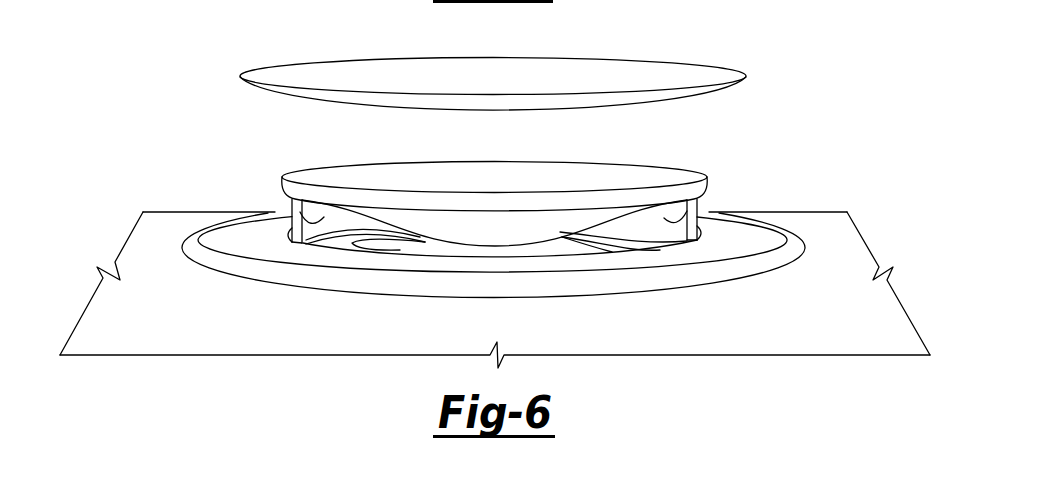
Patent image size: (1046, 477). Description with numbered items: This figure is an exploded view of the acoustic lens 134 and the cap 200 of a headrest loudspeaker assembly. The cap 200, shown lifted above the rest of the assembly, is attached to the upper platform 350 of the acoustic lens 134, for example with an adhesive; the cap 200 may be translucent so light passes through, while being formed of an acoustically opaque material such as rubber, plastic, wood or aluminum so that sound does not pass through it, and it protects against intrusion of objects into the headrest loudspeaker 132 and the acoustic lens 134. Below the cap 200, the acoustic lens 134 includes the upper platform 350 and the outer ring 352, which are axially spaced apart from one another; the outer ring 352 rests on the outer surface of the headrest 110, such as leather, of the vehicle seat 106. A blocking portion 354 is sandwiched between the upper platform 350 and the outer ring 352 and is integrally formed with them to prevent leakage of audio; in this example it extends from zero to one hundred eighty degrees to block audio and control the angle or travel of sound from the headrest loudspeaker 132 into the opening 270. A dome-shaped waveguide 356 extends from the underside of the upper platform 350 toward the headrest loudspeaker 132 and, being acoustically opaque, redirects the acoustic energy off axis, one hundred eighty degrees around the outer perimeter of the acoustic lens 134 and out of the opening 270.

The cap 200 is at (345, 76).
The upper platform 350 is at (343, 175).
The outer ring 352 is at (237, 237).
The blocking portion 354 is at (300, 212).
The acoustic lens 134 is at (690, 212).
The headrest loudspeaker 132 is at (382, 245).
The waveguide 356 is at (438, 237).
The opening 270 is at (613, 262).
The headrest 110 is at (722, 325).
The vehicle seat 106 is at (837, 335).